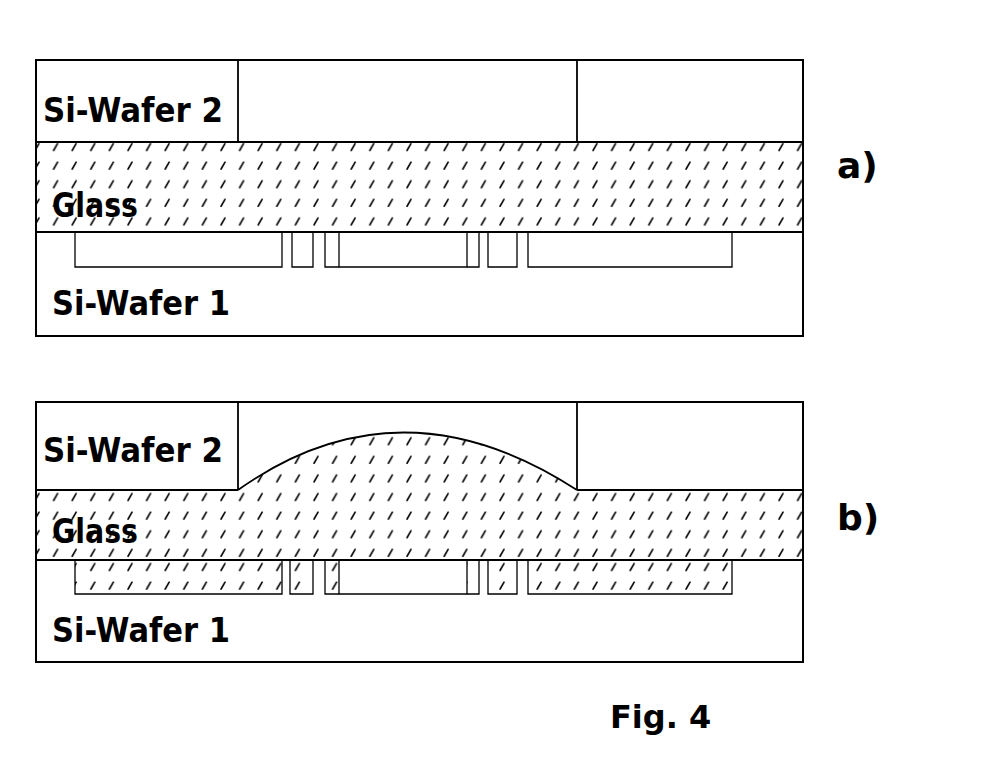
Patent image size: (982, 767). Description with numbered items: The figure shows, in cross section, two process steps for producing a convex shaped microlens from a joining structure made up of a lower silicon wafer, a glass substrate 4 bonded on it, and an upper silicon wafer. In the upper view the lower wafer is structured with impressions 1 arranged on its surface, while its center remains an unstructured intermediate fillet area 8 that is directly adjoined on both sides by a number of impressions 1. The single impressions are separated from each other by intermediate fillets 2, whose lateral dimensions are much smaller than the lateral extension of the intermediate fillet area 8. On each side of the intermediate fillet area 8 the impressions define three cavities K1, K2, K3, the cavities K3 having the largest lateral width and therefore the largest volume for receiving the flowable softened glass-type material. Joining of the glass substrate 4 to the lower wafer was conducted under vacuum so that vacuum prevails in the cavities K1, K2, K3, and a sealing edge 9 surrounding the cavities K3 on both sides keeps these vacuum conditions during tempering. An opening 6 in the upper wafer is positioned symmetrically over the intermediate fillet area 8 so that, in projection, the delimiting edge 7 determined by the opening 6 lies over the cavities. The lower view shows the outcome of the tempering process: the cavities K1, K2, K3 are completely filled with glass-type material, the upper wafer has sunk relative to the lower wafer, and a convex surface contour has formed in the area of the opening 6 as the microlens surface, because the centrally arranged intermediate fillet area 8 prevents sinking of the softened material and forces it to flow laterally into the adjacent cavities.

In FIG. 4a, the impressions 1 is at (622, 250).
In FIG. 4b, the intermediate fillets 2 is at (290, 585).
In FIG. 4a, the glass substrate 4 is at (462, 191).
In FIG. 4a, the opening 6 is at (399, 101).
In FIG. 4b, the delimiting edge 7 is at (569, 487).
In FIG. 4a, the intermediate fillet area 8 is at (399, 263).
In FIG. 4b, the intermediate fillet area 8 is at (386, 593).
In FIG. 4b, the sealing edge 9 is at (40, 586).
In FIG. 4b, the cavity K1 is at (472, 580).
In FIG. 4b, the cavity K2 is at (503, 587).
In FIG. 4b, the cavity K3 is at (590, 585).